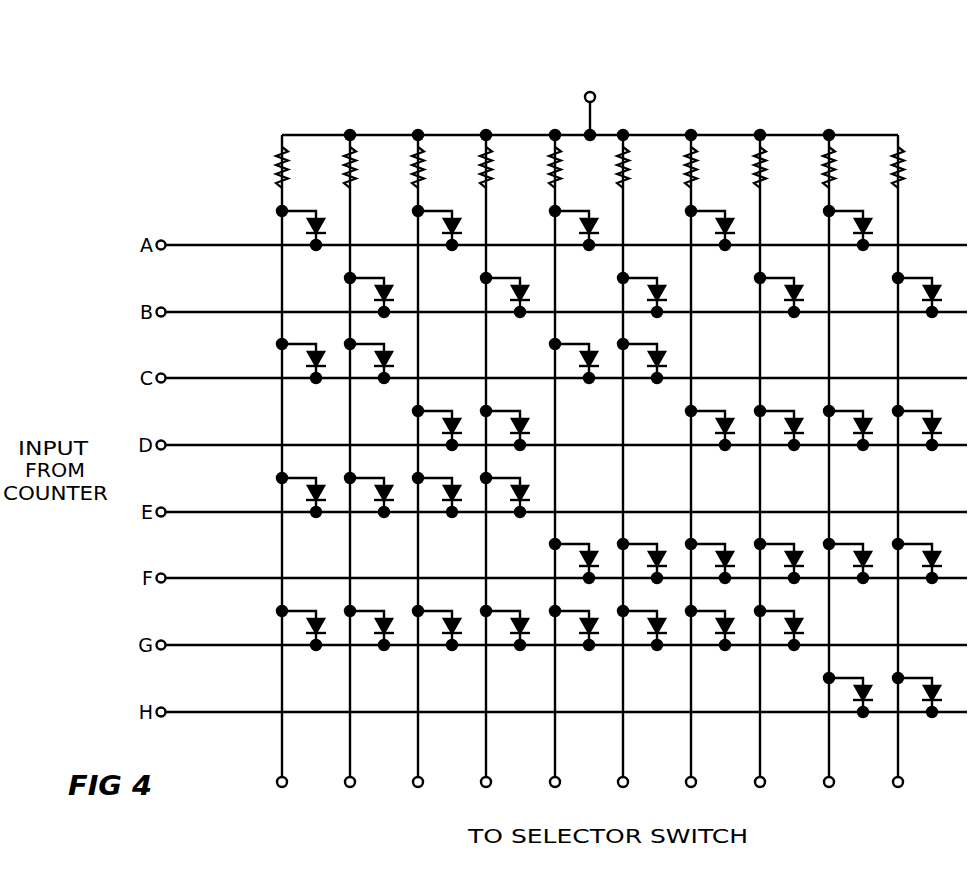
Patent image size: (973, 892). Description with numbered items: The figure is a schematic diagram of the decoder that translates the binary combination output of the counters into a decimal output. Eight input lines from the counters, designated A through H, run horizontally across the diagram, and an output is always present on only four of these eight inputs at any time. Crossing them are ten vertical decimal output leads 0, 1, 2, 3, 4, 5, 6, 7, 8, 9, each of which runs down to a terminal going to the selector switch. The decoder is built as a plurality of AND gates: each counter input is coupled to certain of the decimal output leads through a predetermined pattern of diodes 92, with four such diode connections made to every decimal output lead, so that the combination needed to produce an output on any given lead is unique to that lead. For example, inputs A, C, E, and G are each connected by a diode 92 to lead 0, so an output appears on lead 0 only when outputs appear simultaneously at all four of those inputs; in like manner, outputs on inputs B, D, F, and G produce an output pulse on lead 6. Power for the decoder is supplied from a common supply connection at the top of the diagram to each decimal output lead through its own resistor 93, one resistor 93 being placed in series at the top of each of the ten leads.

The diode 92 is at (298, 628).
The resistor 93 is at (891, 178).
The decimal output lead 0 is at (281, 474).
The decimal output lead 1 is at (349, 471).
The decimal output lead 2 is at (417, 471).
The decimal output lead 3 is at (485, 471).
The decimal output lead 4 is at (554, 471).
The decimal output lead 5 is at (622, 471).
The decimal output lead 6 is at (690, 471).
The decimal output lead 7 is at (759, 471).
The decimal output lead 8 is at (828, 471).
The decimal output lead 9 is at (897, 474).